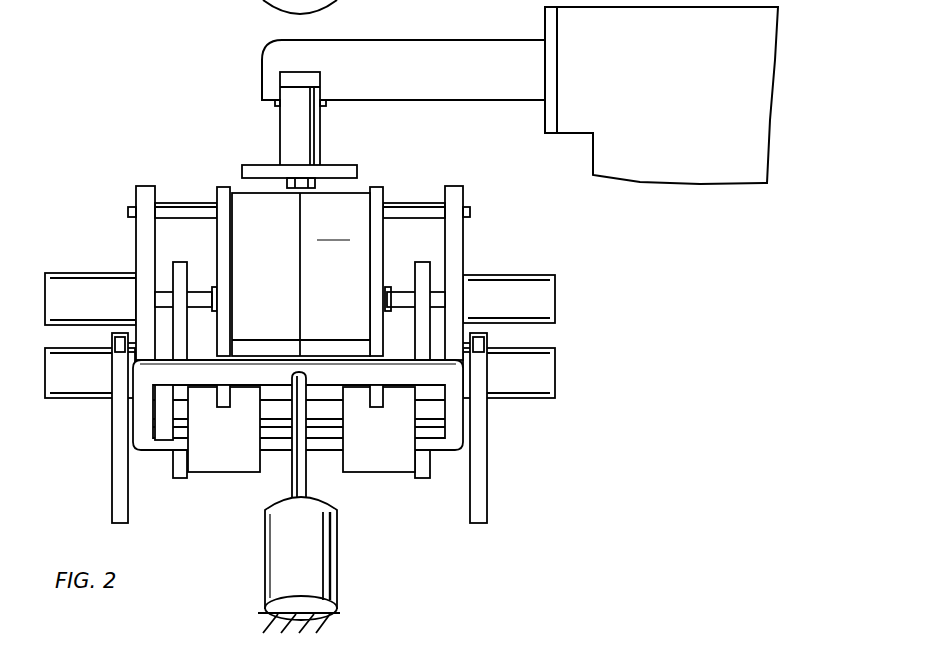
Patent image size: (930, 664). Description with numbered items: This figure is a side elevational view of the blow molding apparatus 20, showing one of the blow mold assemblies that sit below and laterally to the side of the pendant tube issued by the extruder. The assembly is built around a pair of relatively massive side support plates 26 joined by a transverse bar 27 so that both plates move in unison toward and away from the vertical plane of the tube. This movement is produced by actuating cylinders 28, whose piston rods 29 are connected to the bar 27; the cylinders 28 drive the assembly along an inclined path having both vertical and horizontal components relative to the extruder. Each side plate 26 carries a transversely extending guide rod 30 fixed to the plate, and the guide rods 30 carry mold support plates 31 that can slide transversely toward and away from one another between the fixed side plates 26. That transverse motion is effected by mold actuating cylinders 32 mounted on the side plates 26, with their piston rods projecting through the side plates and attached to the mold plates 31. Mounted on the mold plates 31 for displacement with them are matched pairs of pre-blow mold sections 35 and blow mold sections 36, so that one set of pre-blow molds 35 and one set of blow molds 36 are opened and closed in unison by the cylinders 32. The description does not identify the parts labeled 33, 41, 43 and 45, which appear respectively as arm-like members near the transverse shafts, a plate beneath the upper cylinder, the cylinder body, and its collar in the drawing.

The blow molding apparatus 20 is at (162, 128).
The side support plates 26 is at (143, 193).
The transverse bar 27 is at (355, 375).
The actuating cylinders 28 is at (323, 8).
The piston rods 29 is at (292, 492).
The guide rod 30 is at (181, 203).
The mold support plates 31 is at (218, 237).
The mold actuating cylinders 32 is at (96, 306).
The arm 33 is at (196, 305).
The pre-blow mold sections 35 is at (279, 288).
The blow mold sections 36 is at (231, 455).
The mounting plate 41 is at (345, 166).
The shaft 43 is at (310, 72).
The collar 45 is at (317, 87).